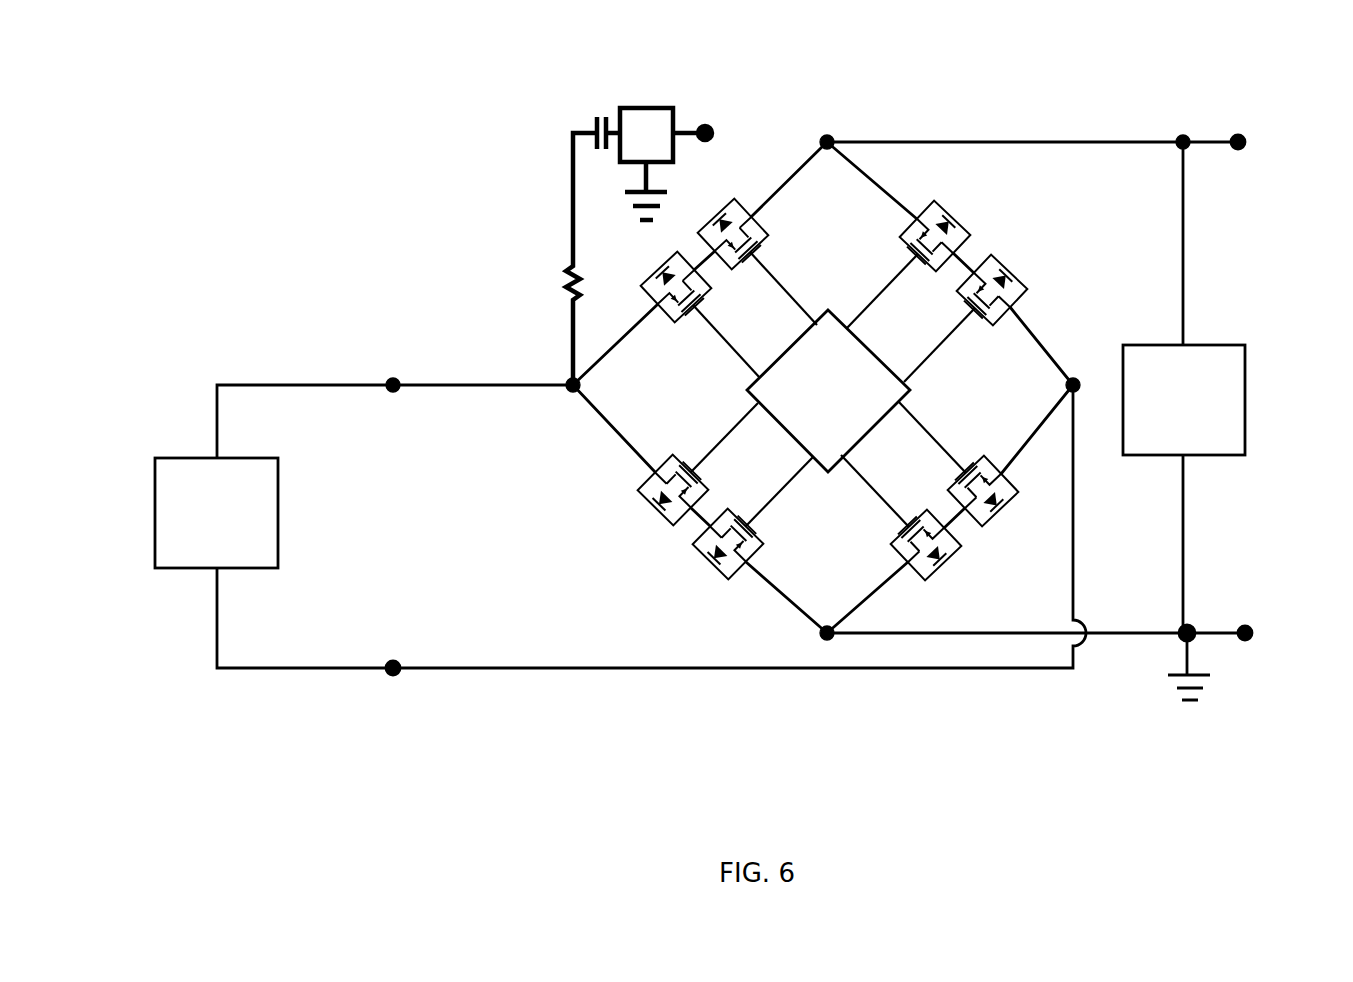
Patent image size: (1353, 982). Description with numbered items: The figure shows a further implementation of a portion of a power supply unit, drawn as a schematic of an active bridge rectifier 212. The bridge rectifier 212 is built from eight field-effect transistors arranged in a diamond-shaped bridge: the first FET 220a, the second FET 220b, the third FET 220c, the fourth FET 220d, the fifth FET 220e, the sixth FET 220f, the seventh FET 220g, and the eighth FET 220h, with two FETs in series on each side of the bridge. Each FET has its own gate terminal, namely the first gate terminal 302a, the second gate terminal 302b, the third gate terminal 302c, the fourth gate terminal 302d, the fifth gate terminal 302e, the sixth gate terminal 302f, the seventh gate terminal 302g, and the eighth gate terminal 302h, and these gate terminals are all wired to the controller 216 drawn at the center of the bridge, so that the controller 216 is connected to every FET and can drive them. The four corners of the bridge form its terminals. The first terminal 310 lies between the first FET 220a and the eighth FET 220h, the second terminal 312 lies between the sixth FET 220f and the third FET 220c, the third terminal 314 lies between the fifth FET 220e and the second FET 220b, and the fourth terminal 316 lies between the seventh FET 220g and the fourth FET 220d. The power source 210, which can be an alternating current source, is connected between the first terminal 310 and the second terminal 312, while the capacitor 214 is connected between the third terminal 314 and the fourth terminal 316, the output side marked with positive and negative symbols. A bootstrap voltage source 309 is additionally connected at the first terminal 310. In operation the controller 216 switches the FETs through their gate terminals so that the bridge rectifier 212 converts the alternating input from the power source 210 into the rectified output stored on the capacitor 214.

The bridge rectifier 212 is at (318, 92).
The power source 210 is at (216, 513).
The capacitor 214 is at (1184, 384).
The controller 216 is at (828, 391).
The first FET 220a is at (672, 328).
The second FET 220b is at (955, 208).
The third FET 220c is at (1025, 535).
The fourth FET 220d is at (680, 588).
The fifth FET 220e is at (735, 185).
The sixth FET 220f is at (1025, 265).
The seventh FET 220g is at (870, 560).
The eighth FET 220h is at (615, 520).
The first gate terminal 302a is at (698, 340).
The second gate terminal 302b is at (874, 265).
The third gate terminal 302c is at (967, 452).
The fourth gate terminal 302d is at (770, 520).
The fifth gate terminal 302e is at (750, 270).
The sixth gate terminal 302f is at (946, 318).
The seventh gate terminal 302g is at (910, 520).
The eighth gate terminal 302h is at (708, 467).
The bootstrap voltage source 309 is at (545, 120).
The first terminal 310 is at (545, 412).
The second terminal 312 is at (1090, 358).
The third terminal 314 is at (840, 130).
The fourth terminal 316 is at (770, 633).